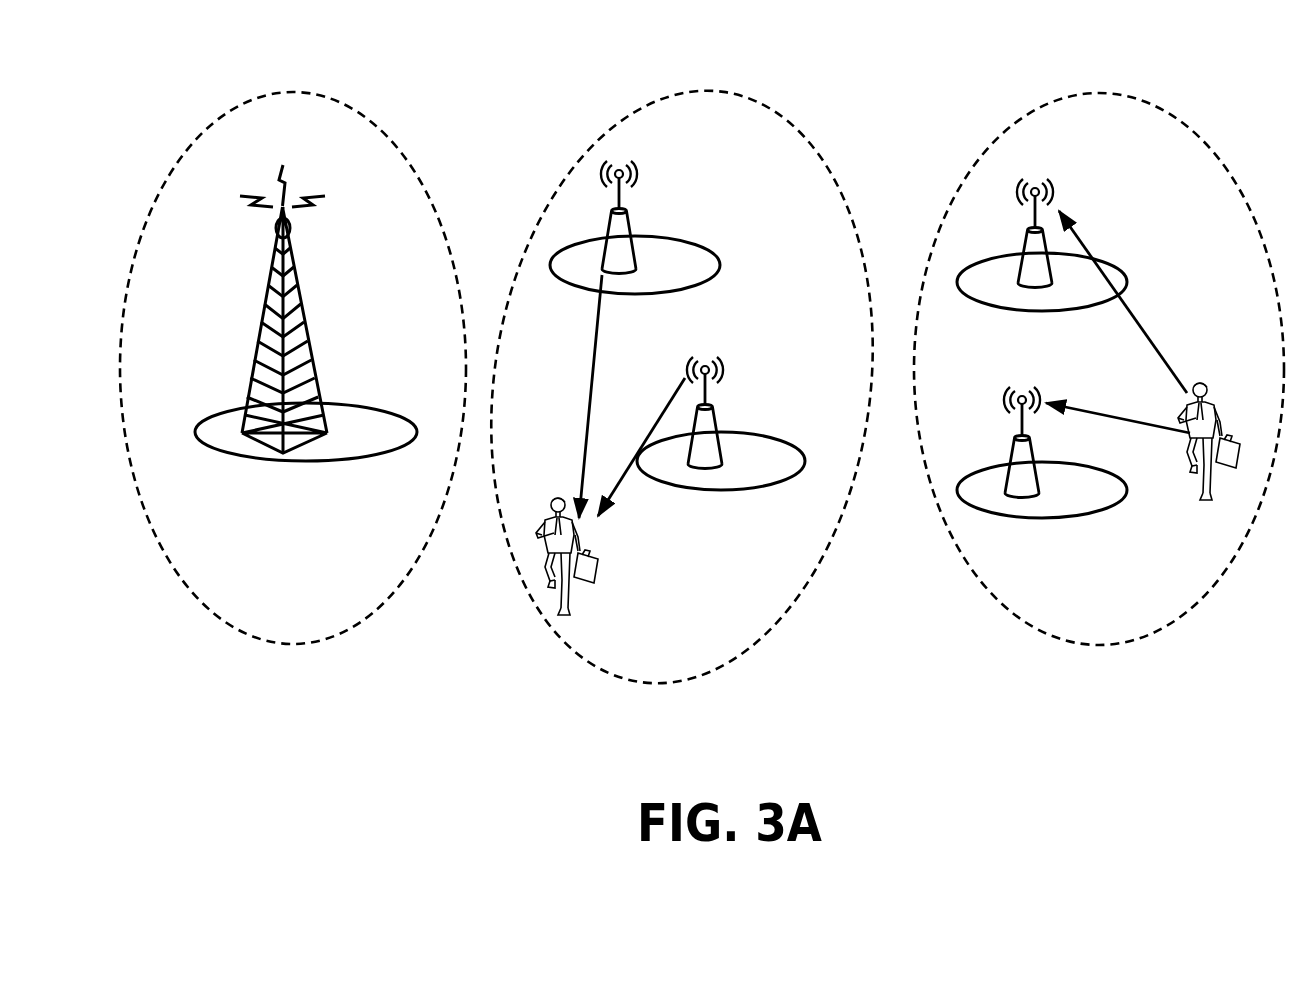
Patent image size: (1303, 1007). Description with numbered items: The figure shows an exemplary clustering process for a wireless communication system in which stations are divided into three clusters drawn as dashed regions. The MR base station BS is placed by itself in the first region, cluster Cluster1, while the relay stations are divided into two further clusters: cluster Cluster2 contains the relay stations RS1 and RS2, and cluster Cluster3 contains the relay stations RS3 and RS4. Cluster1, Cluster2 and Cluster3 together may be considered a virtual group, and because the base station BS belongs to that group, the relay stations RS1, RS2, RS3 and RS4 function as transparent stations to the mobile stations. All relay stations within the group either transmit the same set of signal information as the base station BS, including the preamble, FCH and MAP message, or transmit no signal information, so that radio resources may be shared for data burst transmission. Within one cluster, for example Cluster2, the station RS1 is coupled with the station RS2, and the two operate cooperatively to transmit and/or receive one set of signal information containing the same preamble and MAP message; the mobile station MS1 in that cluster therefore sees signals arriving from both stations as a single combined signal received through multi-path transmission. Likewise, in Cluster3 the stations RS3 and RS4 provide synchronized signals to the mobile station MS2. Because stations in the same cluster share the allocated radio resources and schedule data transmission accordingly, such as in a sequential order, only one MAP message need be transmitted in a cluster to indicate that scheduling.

The cluster 1 Cluster1 is at (293, 333).
The cluster 2 Cluster2 is at (681, 365).
The cluster 3 Cluster3 is at (1099, 334).
The MR base station BS is at (306, 345).
The relay station RS1 is at (721, 453).
The relay station RS2 is at (650, 227).
The relay station RS3 is at (1042, 479).
The relay station RS4 is at (1046, 245).
The mobile station MS1 is at (578, 576).
The mobile station MS2 is at (1209, 463).